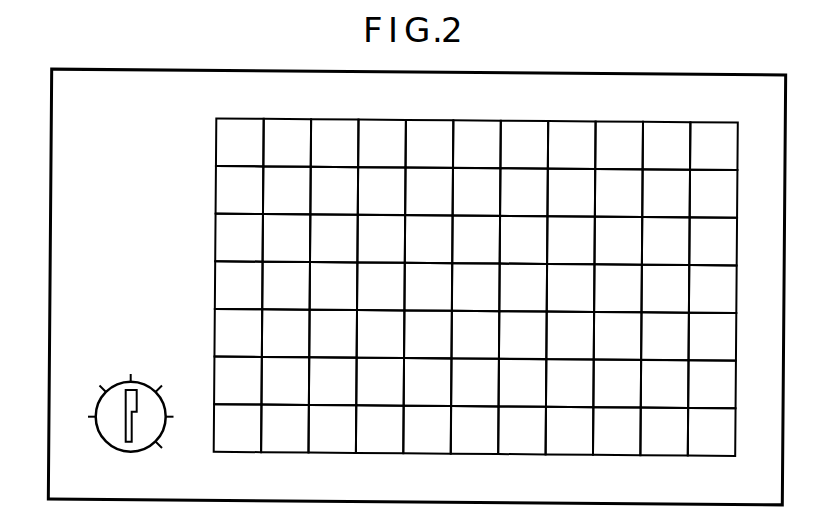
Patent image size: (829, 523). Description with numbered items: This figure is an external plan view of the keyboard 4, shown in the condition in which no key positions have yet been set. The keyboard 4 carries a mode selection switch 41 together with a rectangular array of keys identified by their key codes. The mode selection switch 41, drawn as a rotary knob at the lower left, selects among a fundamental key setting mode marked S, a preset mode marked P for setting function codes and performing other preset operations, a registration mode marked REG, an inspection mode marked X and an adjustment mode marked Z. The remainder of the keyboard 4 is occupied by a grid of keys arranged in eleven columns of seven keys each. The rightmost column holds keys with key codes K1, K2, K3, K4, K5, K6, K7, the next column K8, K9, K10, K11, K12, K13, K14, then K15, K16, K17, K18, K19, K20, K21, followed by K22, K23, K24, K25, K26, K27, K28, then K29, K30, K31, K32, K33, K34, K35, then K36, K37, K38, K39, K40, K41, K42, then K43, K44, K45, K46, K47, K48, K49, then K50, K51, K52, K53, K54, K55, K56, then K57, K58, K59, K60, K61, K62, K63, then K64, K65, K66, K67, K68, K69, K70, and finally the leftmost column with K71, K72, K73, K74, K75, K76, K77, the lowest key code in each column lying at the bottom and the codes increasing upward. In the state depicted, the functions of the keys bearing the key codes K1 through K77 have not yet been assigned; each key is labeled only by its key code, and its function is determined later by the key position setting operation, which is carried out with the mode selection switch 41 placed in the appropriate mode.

The keyboard 4 is at (555, 74).
The mode selection switch 41 is at (106, 447).
The key code K1 is at (712, 432).
The key code K2 is at (712, 384).
The key code K3 is at (713, 337).
The key code K4 is at (713, 289).
The key code K5 is at (713, 241).
The key code K6 is at (714, 194).
The key code K7 is at (714, 146).
The key code K8 is at (664, 432).
The key code K9 is at (665, 384).
The key code K10 is at (665, 336).
The key code K11 is at (666, 289).
The key code K12 is at (666, 241).
The key code K13 is at (666, 193).
The key code K14 is at (667, 146).
The key code K15 is at (617, 431).
The key code K16 is at (617, 384).
The key code K17 is at (618, 336).
The key code K18 is at (618, 288).
The key code K19 is at (618, 241).
The key code K20 is at (619, 193).
The key code K21 is at (619, 145).
The key code K22 is at (570, 431).
The key code K23 is at (570, 383).
The key code K24 is at (570, 336).
The key code K25 is at (571, 288).
The key code K26 is at (571, 240).
The key code K27 is at (571, 193).
The key code K28 is at (572, 145).
The key code K29 is at (522, 430).
The key code K30 is at (523, 383).
The key code K31 is at (523, 335).
The key code K32 is at (523, 288).
The key code K33 is at (524, 240).
The key code K34 is at (524, 192).
The key code K35 is at (524, 145).
The key code K36 is at (475, 430).
The key code K37 is at (475, 382).
The key code K38 is at (476, 335).
The key code K39 is at (476, 287).
The key code K40 is at (476, 240).
The key code K41 is at (477, 192).
The key code K42 is at (477, 144).
The key code K43 is at (427, 430).
The key code K44 is at (428, 382).
The key code K45 is at (428, 334).
The key code K46 is at (428, 287).
The key code K47 is at (429, 239).
The key code K48 is at (429, 192).
The key code K49 is at (430, 144).
The key code K50 is at (380, 429).
The key code K51 is at (380, 382).
The key code K52 is at (381, 334).
The key code K53 is at (381, 286).
The key code K54 is at (381, 239).
The key code K55 is at (382, 191).
The key code K56 is at (382, 144).
The key code K57 is at (332, 429).
The key code K58 is at (333, 381).
The key code K59 is at (333, 334).
The key code K60 is at (334, 286).
The key code K61 is at (334, 238).
The key code K62 is at (334, 191).
The key code K63 is at (335, 143).
The key code K64 is at (285, 429).
The key code K65 is at (285, 381).
The key code K66 is at (286, 333).
The key code K67 is at (286, 286).
The key code K68 is at (287, 238).
The key code K69 is at (287, 190).
The key code K70 is at (287, 143).
The key code K71 is at (238, 428).
The key code K72 is at (238, 381).
The key code K73 is at (238, 333).
The key code K74 is at (239, 285).
The key code K75 is at (239, 238).
The key code K76 is at (240, 190).
The key code K77 is at (240, 142).